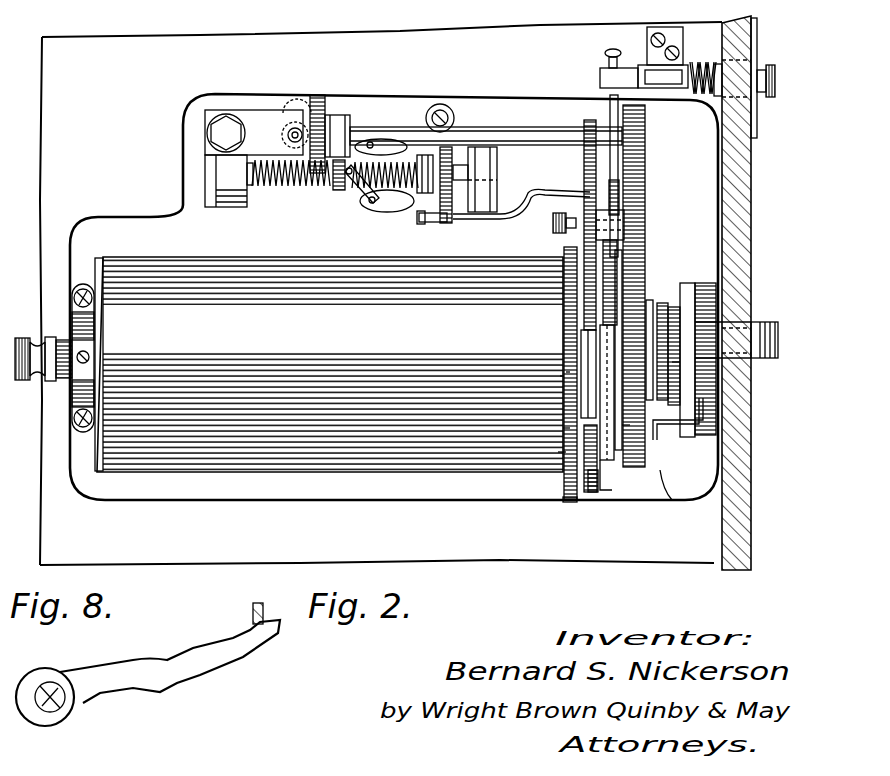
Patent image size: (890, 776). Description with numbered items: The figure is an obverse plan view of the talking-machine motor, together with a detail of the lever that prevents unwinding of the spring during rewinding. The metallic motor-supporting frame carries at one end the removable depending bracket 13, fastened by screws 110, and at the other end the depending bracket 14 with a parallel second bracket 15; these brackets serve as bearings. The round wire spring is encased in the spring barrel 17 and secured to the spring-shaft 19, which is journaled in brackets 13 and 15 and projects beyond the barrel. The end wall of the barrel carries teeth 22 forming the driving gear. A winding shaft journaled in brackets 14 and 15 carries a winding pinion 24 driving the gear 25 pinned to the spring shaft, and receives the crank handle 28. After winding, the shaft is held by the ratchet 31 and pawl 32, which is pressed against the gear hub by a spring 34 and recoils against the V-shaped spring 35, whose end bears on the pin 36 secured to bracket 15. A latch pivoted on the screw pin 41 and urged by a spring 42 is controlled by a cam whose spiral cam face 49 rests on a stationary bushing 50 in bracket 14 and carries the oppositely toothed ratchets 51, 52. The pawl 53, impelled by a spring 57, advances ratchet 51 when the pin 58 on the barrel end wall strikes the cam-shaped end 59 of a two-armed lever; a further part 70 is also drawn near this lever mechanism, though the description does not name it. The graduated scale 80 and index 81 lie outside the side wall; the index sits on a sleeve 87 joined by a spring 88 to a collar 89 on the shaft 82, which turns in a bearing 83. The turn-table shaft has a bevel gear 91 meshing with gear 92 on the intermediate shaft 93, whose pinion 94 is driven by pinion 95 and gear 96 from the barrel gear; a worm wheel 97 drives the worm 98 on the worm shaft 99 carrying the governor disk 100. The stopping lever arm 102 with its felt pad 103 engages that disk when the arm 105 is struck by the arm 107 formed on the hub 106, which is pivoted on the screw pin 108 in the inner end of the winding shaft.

In FIG. 2, the depending lug or bracket 13 is at (72, 386).
In FIG. 2, the depending bracket 14 is at (636, 226).
In FIG. 2, the second bracket 15 is at (708, 320).
In FIG. 2, the spring barrel 17 is at (329, 364).
In FIG. 2, the spring-shaft 19 is at (650, 420).
In FIG. 2, the teeth 22 is at (568, 502).
In FIG. 2, the winding pinion 24 is at (700, 282).
In FIG. 2, the gear 25 is at (686, 307).
In FIG. 2, the crank handle 28 is at (766, 358).
In FIG. 2, the ratchet 31 is at (662, 303).
In FIG. 2, the pawl 32 is at (672, 362).
In FIG. 2, the spring 34 is at (660, 305).
In FIG. 2, the spring 35 is at (660, 470).
In FIG. 2, the pin 36 is at (668, 432).
In FIG. 2, the screw pin 41 is at (611, 255).
In FIG. 2, the spring 42 is at (620, 195).
In FIG. 2, the cam face 49 is at (568, 376).
In FIG. 2, the stationary bushing 50 is at (560, 380).
In FIG. 2, the ratchet 51 is at (585, 366).
In FIG. 2, the ratchet 52 is at (625, 430).
In FIG. 2, the pawl 53 is at (566, 428).
In FIG. 2, the spring 57 is at (560, 450).
In FIG. 2, the pin 58 is at (592, 494).
In FIG. 2, the cam-shaped end 59 is at (604, 492).
In FIG. 2, the pawl 70 is at (605, 458).
In FIG. 2, the graduated scale 80 is at (755, 20).
In FIG. 2, the index or pointer 81 is at (762, 42).
In FIG. 2, the shaft 82 is at (632, 66).
In FIG. 2, the bearing 83 is at (671, 88).
In FIG. 2, the sleeve 87 is at (726, 25).
In FIG. 2, the spring 88 is at (700, 64).
In FIG. 2, the collar 89 is at (688, 100).
In FIG. 2, the bevel gear 91 is at (284, 140).
In FIG. 2, the complemental gear 92 is at (318, 98).
In FIG. 2, the intermediate shaft 93 is at (537, 134).
In FIG. 2, the pinion 94 is at (590, 120).
In FIG. 2, the pinion 95 is at (554, 236).
In FIG. 2, the gear 96 is at (566, 333).
In FIG. 2, the worm wheel 97 is at (297, 102).
In FIG. 2, the worm 98 is at (287, 180).
In FIG. 2, the worm shaft 99 is at (337, 185).
In FIG. 2, the governor disk 100 is at (447, 224).
In FIG. 2, the arm 102 is at (428, 222).
In FIG. 2, the felt pad 103 is at (497, 168).
In FIG. 2, the arm 105 is at (507, 213).
In FIG. 8, the arm 105 is at (256, 604).
In FIG. 8, the hub 106 is at (46, 672).
In FIG. 2, the arm 107 is at (625, 212).
In FIG. 8, the arm 107 is at (198, 664).
In FIG. 8, the screw pin 108 is at (55, 710).
In FIG. 2, the screws 110 is at (86, 288).